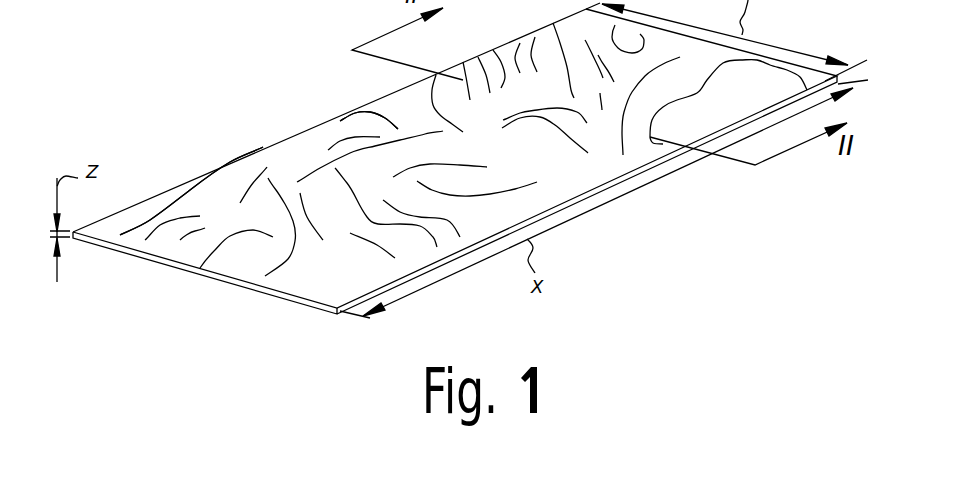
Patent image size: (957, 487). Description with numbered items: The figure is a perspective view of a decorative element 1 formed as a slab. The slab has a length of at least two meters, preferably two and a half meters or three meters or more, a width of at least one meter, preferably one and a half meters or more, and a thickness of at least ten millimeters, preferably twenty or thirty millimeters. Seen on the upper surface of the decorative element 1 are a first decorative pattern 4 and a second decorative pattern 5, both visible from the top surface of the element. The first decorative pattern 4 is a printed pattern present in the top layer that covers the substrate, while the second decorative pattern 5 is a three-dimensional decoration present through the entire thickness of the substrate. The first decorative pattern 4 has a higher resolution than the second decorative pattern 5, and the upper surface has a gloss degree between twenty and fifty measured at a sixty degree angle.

The decorative element 1 is at (170, 124).
The first decorative pattern 4 is at (263, 149).
The second decorative pattern 5 is at (347, 118).